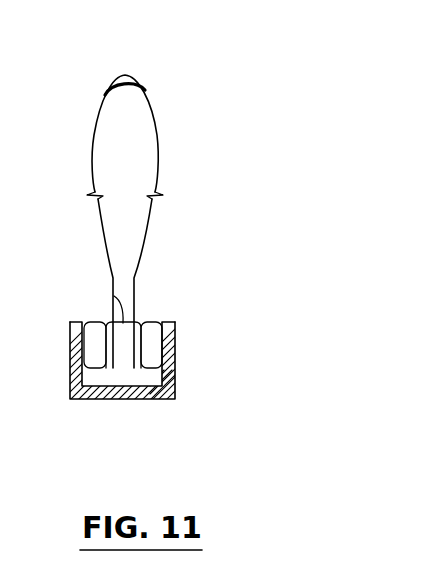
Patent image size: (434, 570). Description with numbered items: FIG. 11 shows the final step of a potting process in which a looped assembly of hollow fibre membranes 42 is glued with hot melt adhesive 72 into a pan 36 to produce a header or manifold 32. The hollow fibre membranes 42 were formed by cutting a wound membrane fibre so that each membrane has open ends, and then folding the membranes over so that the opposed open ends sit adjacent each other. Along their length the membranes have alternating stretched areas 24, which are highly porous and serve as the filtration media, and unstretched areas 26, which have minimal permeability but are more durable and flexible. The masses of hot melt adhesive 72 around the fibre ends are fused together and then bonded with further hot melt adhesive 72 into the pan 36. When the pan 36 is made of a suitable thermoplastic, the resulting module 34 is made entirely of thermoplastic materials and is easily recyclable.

The stretched areas 24 is at (160, 165).
The unstretched areas 26 is at (142, 82).
The header or manifold 32 is at (156, 392).
The module 34 is at (272, 228).
The pan 36 is at (175, 360).
The hollow fibre membranes 42 is at (183, 192).
The hot melt adhesive 72 is at (113, 300).